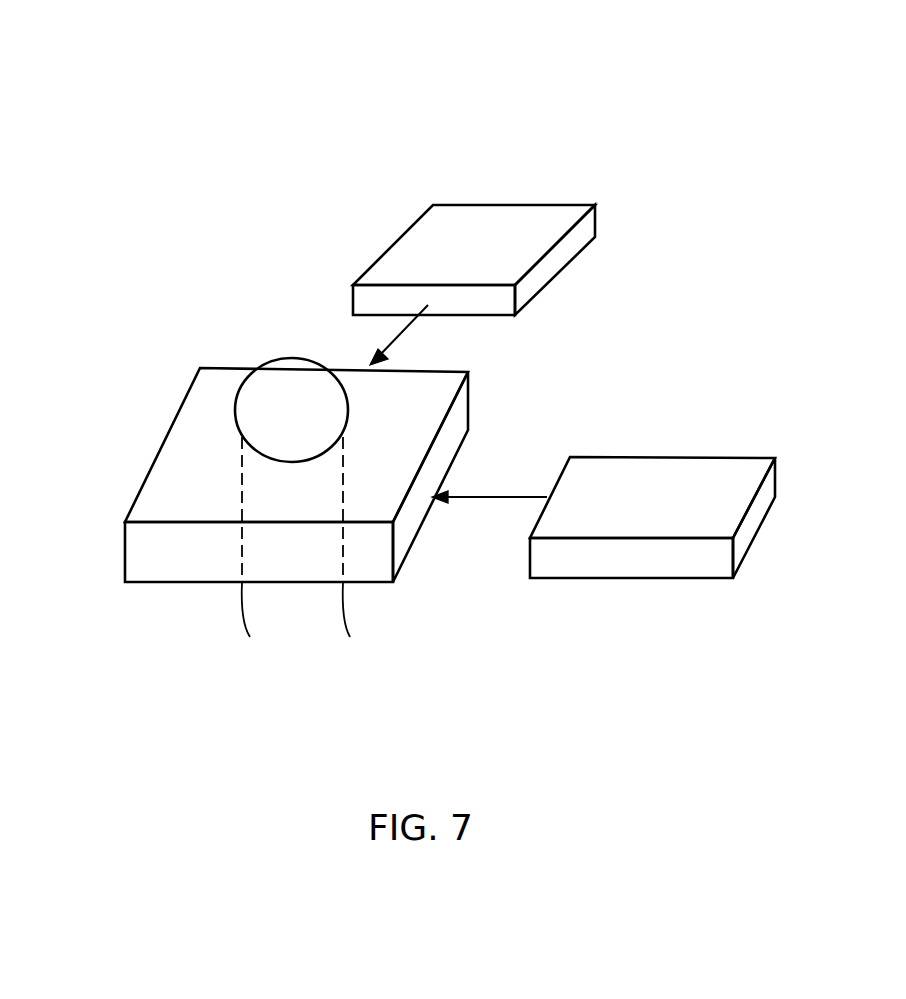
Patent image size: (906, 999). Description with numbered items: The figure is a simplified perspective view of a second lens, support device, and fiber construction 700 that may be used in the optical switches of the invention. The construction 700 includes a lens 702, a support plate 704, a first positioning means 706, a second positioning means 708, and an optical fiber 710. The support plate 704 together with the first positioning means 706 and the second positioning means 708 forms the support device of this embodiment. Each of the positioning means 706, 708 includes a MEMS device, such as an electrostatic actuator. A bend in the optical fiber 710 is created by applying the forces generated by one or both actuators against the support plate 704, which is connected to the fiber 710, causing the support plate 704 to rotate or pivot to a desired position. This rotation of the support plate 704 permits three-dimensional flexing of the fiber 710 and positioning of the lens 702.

The construction 700 is at (246, 152).
The lens 702 is at (265, 365).
The support plate 704 is at (125, 550).
The first positioning means 706 is at (568, 252).
The second positioning means 708 is at (763, 502).
The optical fiber 710 is at (348, 632).